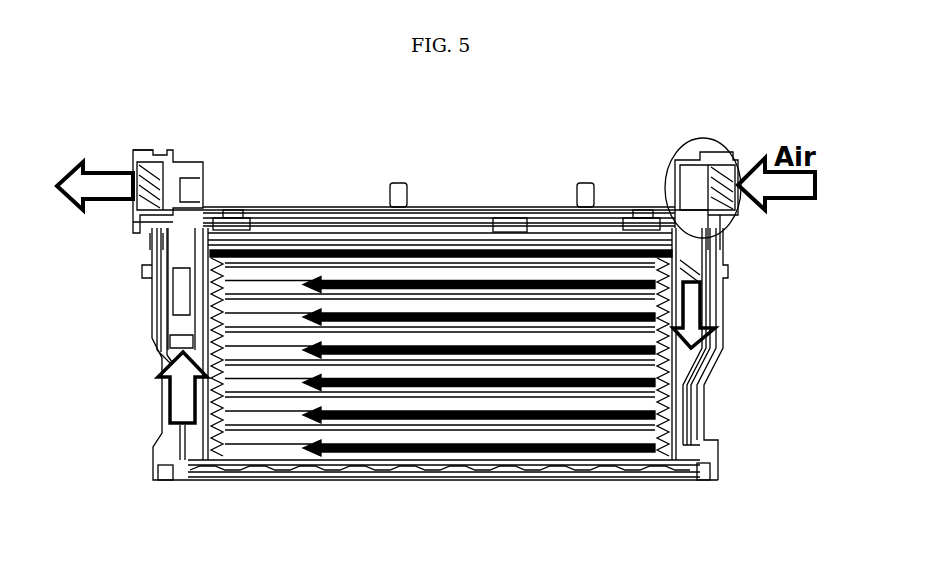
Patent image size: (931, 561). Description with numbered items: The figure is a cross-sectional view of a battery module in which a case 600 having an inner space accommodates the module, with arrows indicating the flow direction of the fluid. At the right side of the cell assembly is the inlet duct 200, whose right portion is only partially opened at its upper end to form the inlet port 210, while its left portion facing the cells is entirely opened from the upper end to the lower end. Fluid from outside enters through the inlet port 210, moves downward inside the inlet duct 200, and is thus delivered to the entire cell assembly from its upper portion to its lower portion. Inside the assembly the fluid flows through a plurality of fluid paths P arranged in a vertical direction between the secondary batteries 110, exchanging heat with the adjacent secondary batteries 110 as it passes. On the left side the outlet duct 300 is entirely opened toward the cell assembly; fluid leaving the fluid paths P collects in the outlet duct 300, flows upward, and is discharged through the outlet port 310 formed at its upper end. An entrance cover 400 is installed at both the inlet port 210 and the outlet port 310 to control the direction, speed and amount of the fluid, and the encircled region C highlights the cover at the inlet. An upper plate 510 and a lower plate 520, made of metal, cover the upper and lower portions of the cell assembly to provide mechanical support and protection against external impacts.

The secondary battery 110 is at (418, 296).
The inlet duct 200 is at (714, 304).
The inlet port 210 is at (746, 162).
The outlet duct 300 is at (152, 322).
The outlet port 310 is at (126, 160).
The entrance cover 400 is at (162, 172).
The upper plate 510 is at (293, 240).
The lower plate 520 is at (330, 477).
The case 600 is at (348, 207).
The fluid path P is at (538, 315).
The detail circle C is at (668, 163).